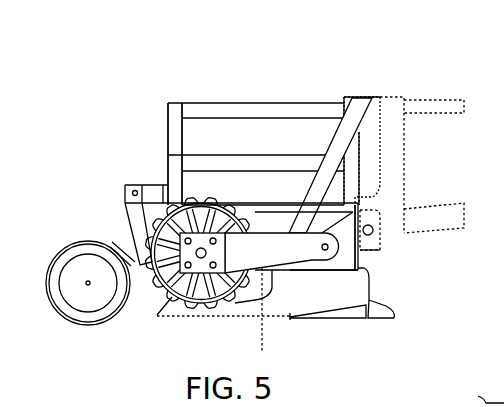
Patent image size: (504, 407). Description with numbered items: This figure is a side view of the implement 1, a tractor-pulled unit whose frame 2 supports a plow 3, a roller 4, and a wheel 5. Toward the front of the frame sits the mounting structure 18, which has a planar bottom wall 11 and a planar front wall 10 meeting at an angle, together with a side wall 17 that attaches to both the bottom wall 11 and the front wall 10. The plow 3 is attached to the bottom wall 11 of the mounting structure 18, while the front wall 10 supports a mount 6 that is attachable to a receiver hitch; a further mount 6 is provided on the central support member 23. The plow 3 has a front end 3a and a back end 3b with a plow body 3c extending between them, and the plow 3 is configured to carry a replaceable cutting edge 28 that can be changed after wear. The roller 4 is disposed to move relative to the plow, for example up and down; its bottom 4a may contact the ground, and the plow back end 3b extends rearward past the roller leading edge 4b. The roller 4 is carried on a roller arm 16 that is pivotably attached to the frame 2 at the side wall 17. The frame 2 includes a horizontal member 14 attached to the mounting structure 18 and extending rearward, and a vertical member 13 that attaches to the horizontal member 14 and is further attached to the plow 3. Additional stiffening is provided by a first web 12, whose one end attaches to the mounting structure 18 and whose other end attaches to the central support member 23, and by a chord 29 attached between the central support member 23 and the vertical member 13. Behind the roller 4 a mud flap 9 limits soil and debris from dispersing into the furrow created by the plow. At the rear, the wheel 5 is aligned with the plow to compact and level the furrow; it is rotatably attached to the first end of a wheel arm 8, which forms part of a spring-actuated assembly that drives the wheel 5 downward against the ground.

The implement 1 is at (125, 80).
The frame 2 is at (268, 58).
The plow 3 is at (378, 340).
The front end 3a is at (396, 326).
The back end 3b is at (163, 318).
The plow body 3c is at (290, 322).
The roller 4 is at (160, 301).
The bottom 4a is at (212, 317).
The roller leading edge 4b is at (262, 346).
The wheel 5 is at (56, 314).
The mount 6 is at (380, 91).
The wheel arm 8 is at (125, 242).
The mud flap 9 is at (128, 193).
The front wall 10 is at (356, 263).
The bottom wall 11 is at (322, 272).
The first web 12 is at (338, 153).
The vertical member 13 is at (168, 170).
The horizontal member 14 is at (290, 205).
The roller arm 16 is at (244, 249).
The side wall 17 is at (300, 270).
The mounting structure 18 is at (378, 262).
The central support member 23 is at (352, 97).
The replaceable cutting edge 28 is at (396, 306).
The chord 29 is at (244, 94).